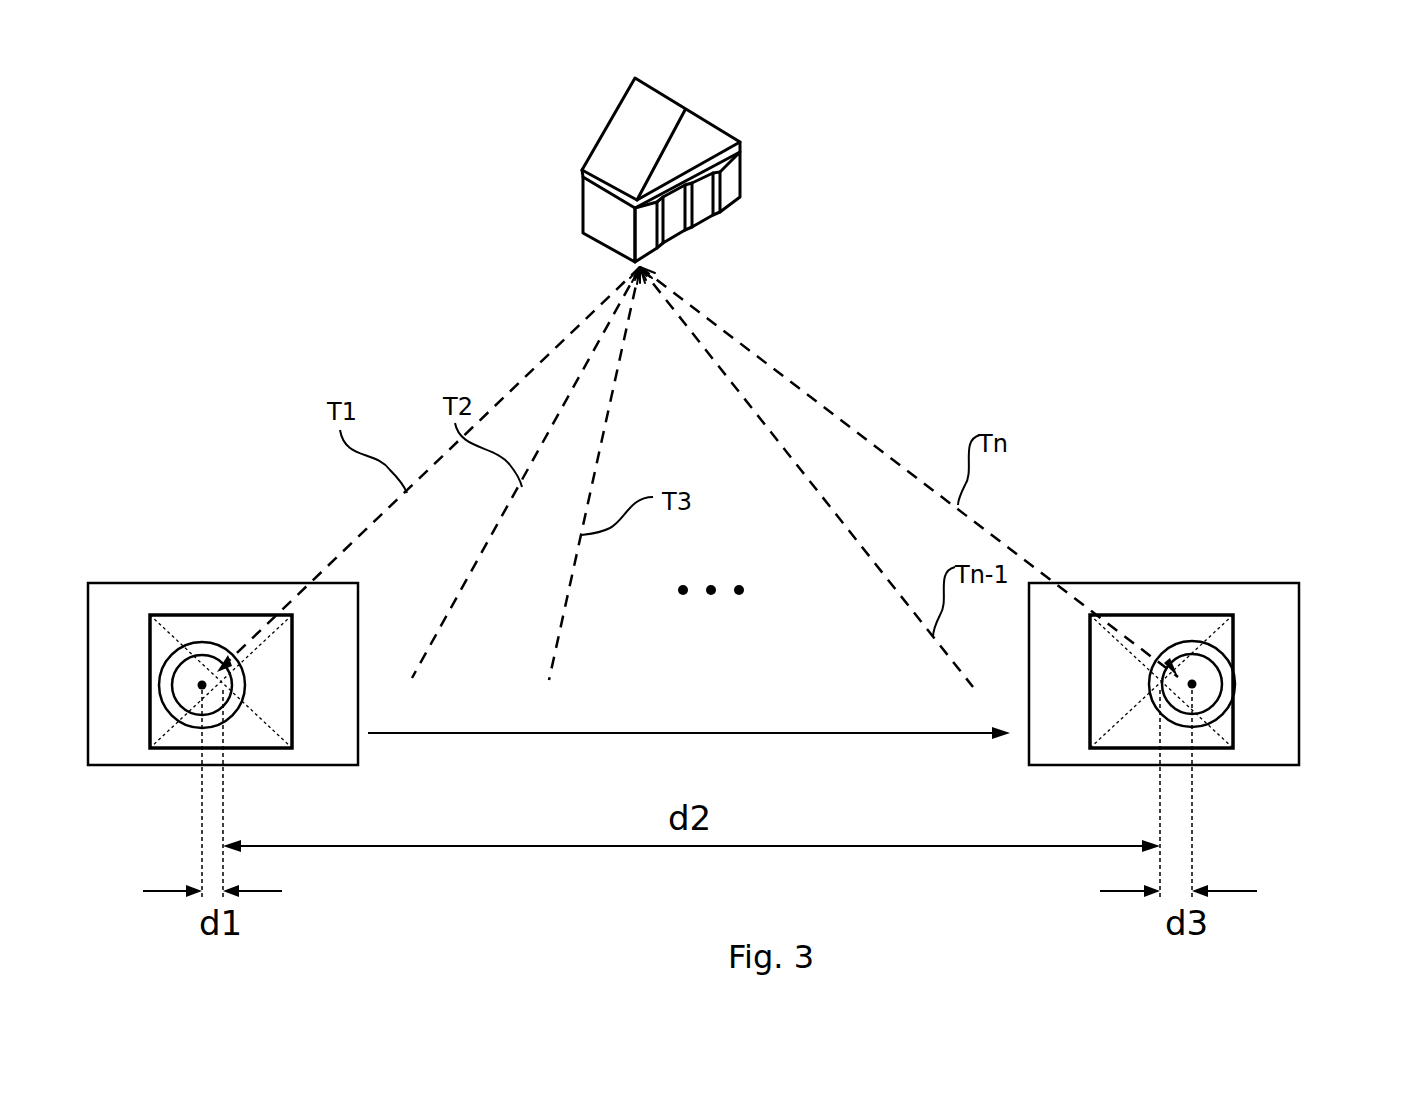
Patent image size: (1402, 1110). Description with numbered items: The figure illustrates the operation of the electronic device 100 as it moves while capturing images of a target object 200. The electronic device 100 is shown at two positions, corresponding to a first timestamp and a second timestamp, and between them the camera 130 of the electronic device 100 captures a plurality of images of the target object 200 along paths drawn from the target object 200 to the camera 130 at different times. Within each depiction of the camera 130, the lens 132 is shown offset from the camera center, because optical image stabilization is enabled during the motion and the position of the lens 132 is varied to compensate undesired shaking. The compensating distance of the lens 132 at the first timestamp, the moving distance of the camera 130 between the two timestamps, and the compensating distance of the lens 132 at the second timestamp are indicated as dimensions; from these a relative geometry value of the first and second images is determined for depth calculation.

The target object 200 is at (598, 135).
The electronic device 100 is at (358, 635).
The camera 130 is at (210, 615).
The lens 132 is at (227, 720).